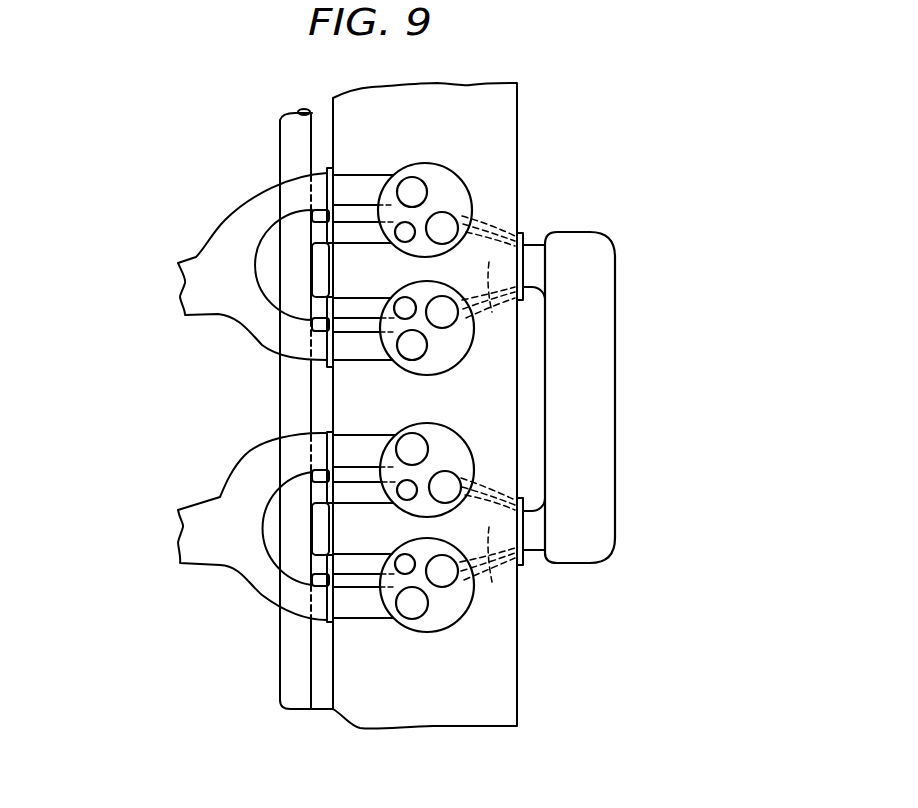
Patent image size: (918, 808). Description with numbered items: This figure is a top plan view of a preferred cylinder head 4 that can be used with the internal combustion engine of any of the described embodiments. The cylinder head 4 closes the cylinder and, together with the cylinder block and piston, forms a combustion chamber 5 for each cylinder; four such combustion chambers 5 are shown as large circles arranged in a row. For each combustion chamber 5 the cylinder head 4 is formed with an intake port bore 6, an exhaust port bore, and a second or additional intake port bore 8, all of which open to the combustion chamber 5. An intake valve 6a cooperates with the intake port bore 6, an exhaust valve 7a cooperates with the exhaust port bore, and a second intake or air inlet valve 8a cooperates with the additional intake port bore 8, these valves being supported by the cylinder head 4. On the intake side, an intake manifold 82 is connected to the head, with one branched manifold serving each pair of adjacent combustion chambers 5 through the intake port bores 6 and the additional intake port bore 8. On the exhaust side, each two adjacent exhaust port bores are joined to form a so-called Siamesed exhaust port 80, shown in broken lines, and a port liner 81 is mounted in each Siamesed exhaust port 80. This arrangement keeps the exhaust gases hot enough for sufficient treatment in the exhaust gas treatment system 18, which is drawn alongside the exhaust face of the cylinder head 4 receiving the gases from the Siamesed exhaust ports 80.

The cylinder head 4 is at (425, 728).
The combustion chamber 5 is at (438, 177).
The intake port bore 6 is at (353, 185).
The intake valve 6a is at (413, 177).
The exhaust valve 7a is at (443, 215).
The second or additional intake port bore 8 is at (356, 233).
The second intake or air inlet valve 8a is at (406, 298).
The exhaust gas treatment system 18 is at (588, 564).
The Siamesed exhaust port 80 is at (508, 592).
The port liner 81 is at (492, 220).
The intake manifold 82 is at (140, 293).